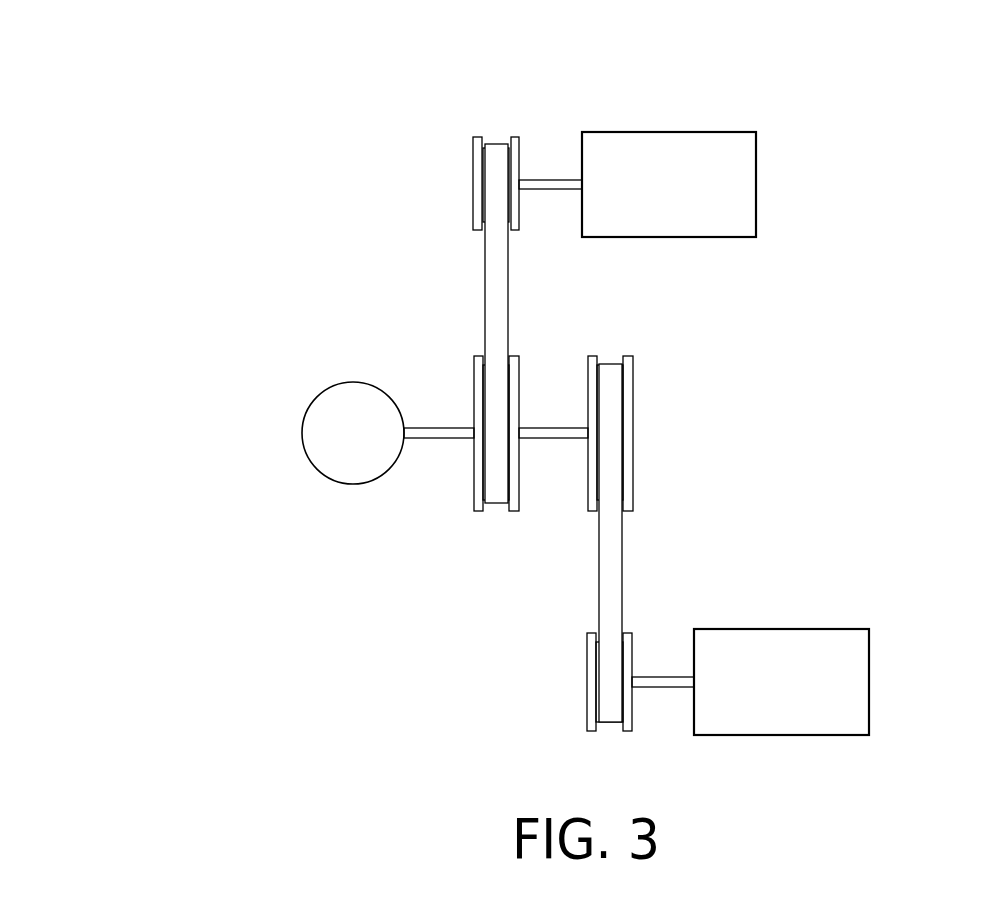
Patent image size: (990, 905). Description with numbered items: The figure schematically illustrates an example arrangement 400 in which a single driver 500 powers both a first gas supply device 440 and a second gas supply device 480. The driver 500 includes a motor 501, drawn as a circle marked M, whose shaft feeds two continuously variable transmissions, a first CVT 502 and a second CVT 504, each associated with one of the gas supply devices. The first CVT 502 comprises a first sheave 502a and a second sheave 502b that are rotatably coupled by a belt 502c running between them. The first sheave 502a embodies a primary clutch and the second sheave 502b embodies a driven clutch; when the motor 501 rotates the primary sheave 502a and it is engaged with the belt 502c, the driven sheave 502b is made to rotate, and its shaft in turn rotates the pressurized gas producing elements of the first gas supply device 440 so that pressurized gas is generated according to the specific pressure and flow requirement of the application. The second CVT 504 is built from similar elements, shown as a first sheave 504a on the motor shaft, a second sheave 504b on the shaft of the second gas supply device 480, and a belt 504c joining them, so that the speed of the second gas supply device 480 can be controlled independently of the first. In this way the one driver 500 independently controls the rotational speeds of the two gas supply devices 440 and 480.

The drive system 400 is at (283, 132).
The driver 500 is at (302, 388).
The motor 501 is at (353, 382).
The second continuously variable transmission 504 is at (473, 527).
The first pulley 504a is at (474, 492).
The second pulley 504b is at (473, 182).
The first belt 504c is at (485, 297).
The second gas supply device 480 is at (757, 182).
The first continuously variable transmission 502 is at (642, 345).
The first sheave 502a is at (633, 442).
The second sheave 502b is at (587, 680).
The belt 502c is at (622, 560).
The first gas supply device 440 is at (870, 685).